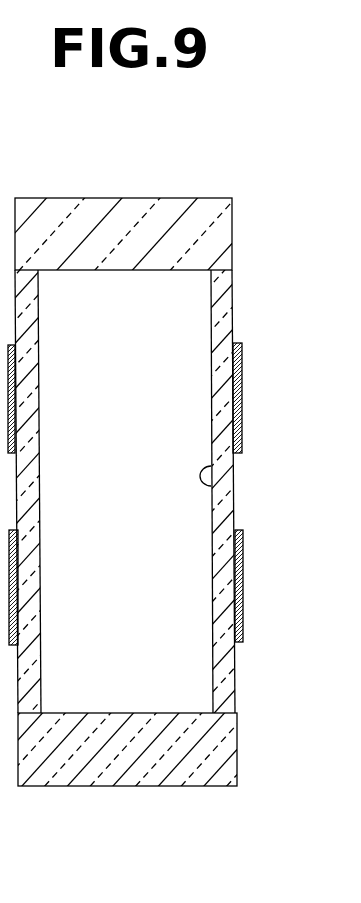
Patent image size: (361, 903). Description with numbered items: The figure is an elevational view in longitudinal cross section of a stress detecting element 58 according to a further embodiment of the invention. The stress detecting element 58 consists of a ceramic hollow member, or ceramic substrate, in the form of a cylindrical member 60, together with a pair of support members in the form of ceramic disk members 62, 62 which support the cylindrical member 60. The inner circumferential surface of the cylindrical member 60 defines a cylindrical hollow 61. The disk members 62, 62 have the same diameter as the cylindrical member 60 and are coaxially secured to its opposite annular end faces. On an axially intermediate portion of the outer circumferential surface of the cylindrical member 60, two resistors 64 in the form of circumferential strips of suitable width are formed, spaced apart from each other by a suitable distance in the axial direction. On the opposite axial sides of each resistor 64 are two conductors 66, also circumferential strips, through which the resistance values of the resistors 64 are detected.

The stress detecting element 58 is at (268, 172).
The cylindrical member 60 is at (220, 307).
The cylindrical hollow 61 is at (220, 485).
The ceramic disk member 62 is at (143, 208).
The resistor 64 is at (240, 393).
The conductor 66 is at (238, 357).